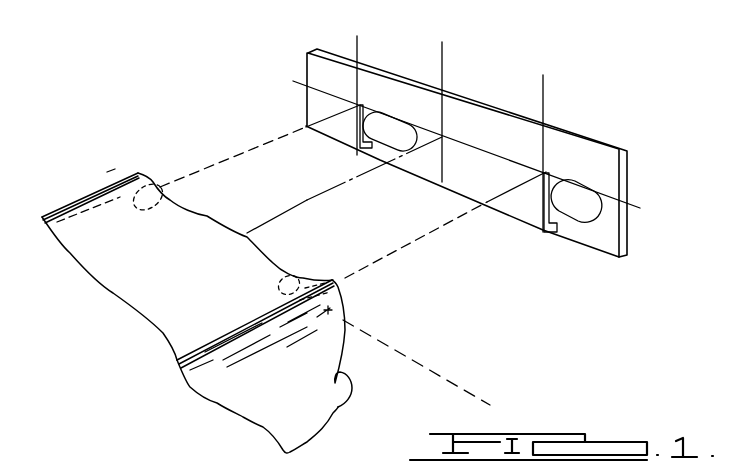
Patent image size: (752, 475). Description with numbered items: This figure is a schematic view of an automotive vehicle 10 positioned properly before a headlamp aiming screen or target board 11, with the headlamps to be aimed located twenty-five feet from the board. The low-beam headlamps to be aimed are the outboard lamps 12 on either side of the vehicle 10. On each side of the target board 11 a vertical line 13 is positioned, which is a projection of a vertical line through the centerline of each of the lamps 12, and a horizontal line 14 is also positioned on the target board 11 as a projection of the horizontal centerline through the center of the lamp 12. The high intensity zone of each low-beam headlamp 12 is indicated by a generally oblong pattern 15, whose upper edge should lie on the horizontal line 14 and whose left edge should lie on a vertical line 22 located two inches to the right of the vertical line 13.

The automotive vehicle 10 is at (98, 192).
The headlamp aiming screen or target board 11 is at (385, 71).
The outboard lamps 12 is at (157, 170).
The vertical line 13 is at (357, 43).
The horizontal line 14 is at (483, 130).
The oblong pattern 15 is at (400, 152).
The vertical line 22 is at (363, 154).